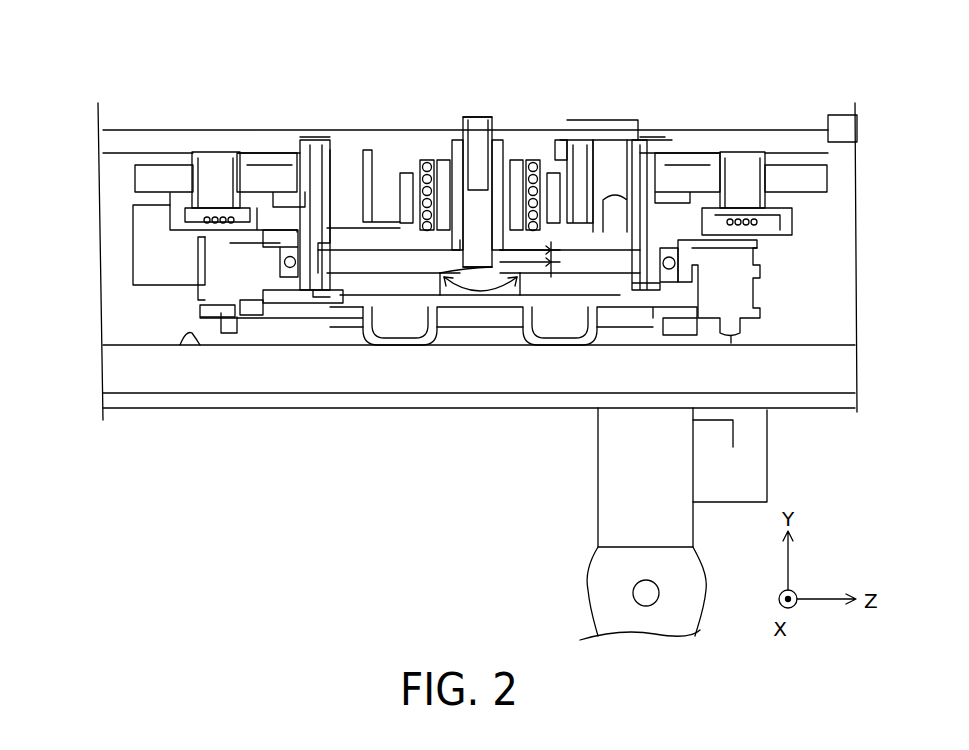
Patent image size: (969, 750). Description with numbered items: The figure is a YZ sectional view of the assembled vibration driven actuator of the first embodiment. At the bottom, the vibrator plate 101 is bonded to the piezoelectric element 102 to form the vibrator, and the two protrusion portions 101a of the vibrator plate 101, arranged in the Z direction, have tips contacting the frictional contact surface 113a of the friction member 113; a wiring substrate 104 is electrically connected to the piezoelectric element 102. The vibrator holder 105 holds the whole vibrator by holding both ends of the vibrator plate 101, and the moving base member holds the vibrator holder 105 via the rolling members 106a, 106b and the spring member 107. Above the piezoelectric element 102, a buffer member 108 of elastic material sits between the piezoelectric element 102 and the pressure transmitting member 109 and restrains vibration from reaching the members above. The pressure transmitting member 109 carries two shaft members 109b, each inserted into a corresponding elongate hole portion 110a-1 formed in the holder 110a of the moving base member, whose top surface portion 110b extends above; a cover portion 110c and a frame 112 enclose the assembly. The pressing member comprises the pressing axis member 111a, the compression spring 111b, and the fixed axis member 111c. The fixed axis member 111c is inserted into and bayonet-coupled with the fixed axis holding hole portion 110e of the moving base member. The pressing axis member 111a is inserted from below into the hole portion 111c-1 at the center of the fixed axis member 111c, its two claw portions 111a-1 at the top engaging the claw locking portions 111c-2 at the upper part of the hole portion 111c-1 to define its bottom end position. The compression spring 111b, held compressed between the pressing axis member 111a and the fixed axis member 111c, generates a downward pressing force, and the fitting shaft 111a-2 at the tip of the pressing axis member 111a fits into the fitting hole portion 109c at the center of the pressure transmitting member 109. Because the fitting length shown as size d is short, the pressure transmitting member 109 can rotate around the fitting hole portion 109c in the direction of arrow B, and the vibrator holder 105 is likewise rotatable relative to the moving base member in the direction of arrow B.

The vibrator plate 101 is at (478, 312).
The protrusion portions 101a is at (430, 268).
The piezoelectric element 102 is at (363, 300).
The wiring substrate 104 is at (598, 572).
The vibrator holder 105 is at (240, 263).
The rolling member 106a is at (283, 260).
The rolling member 106b is at (680, 263).
The spring member 107 is at (680, 256).
The buffer member 108 is at (363, 283).
The pressure transmitting member 109 is at (617, 261).
The shaft members 109b is at (312, 140).
The fitting hole portion 109c is at (473, 272).
The holder 110a is at (148, 216).
The elongate hole portions 110a-1 is at (343, 153).
The top surface portion 110b is at (148, 178).
The stator core 110c is at (214, 164).
The fixed axis holding hole portion 110e is at (557, 160).
The pressing axis member 111a is at (477, 200).
The claw portions 111a-1 is at (497, 122).
The fitting shaft 111a-2 is at (447, 262).
The compression spring 111b is at (412, 165).
The fixed axis member 111c is at (527, 150).
The hole portion 111c-1 is at (444, 158).
The claw locking portions 111c-2 is at (462, 125).
The housing 112 is at (134, 131).
The friction member 113 is at (224, 367).
The frictional contact surface 113a is at (187, 340).
The arrow B is at (500, 296).
The size d is at (553, 279).